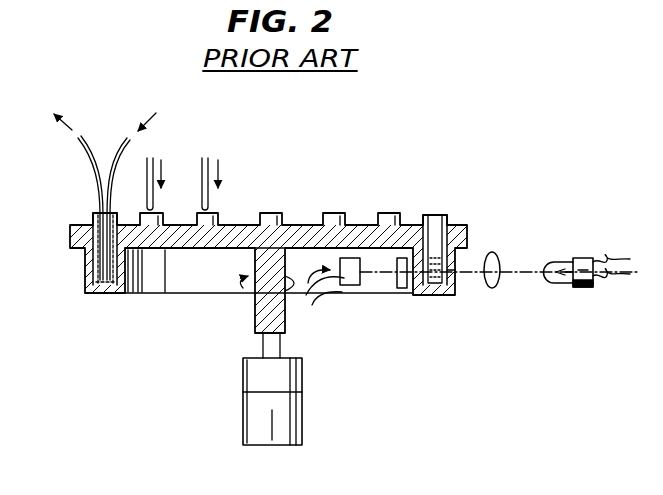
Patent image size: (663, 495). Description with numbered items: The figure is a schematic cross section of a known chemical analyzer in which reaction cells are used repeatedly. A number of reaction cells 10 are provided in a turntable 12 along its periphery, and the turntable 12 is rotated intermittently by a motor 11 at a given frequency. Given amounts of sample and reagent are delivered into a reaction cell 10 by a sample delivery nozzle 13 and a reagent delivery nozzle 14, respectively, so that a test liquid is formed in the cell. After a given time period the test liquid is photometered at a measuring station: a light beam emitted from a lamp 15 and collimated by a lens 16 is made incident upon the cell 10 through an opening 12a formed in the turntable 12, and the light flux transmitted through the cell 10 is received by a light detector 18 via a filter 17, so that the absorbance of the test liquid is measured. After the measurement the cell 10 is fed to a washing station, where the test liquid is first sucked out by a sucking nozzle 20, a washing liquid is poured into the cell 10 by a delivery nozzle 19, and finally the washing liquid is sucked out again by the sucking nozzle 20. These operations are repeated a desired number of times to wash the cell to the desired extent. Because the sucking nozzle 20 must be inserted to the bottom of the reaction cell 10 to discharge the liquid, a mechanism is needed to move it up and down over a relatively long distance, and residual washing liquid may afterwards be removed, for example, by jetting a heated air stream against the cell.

The reaction cell 10 is at (95, 213).
The motor 11 is at (293, 412).
The turntable 12 is at (212, 243).
The opening 12a is at (450, 270).
The sample delivery nozzle 13 is at (150, 162).
The reagent delivery nozzle 14 is at (206, 162).
The lamp 15 is at (585, 289).
The lens 16 is at (493, 284).
The filter 17 is at (401, 290).
The light detector 18 is at (352, 287).
The delivery nozzle 19 is at (118, 147).
The sucking nozzle 20 is at (88, 156).